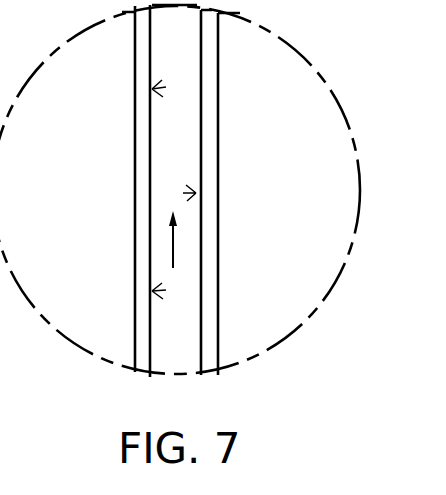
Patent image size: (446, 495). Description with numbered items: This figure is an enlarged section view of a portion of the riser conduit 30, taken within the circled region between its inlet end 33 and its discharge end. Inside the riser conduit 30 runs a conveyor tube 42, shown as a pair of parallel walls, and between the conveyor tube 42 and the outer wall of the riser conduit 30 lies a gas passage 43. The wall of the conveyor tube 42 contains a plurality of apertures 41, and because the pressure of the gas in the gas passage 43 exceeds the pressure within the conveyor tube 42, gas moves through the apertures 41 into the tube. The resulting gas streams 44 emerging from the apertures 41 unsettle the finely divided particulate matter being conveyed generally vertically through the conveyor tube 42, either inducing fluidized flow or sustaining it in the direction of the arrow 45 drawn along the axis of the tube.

The riser conduit 30 is at (213, 318).
The inlet end 33 is at (219, 69).
The apertures 41 is at (137, 89).
The conveyor tube 42 is at (201, 267).
The gas passage 43 is at (209, 136).
The gas streams 44 is at (154, 87).
The arrow 45 is at (173, 240).